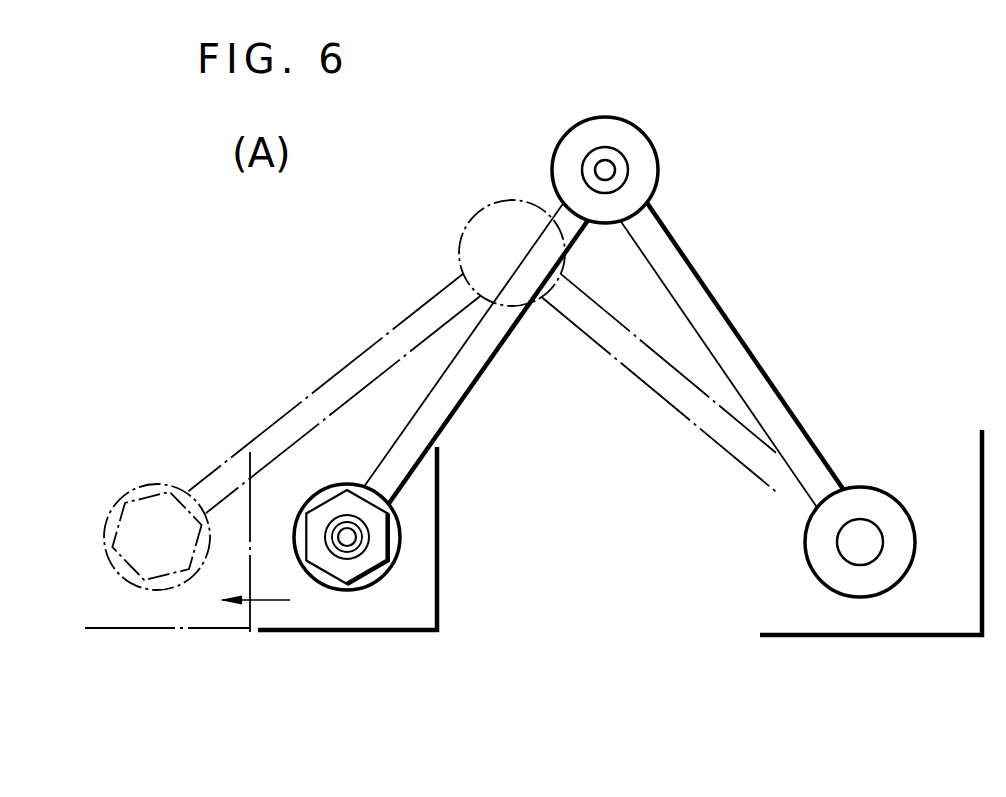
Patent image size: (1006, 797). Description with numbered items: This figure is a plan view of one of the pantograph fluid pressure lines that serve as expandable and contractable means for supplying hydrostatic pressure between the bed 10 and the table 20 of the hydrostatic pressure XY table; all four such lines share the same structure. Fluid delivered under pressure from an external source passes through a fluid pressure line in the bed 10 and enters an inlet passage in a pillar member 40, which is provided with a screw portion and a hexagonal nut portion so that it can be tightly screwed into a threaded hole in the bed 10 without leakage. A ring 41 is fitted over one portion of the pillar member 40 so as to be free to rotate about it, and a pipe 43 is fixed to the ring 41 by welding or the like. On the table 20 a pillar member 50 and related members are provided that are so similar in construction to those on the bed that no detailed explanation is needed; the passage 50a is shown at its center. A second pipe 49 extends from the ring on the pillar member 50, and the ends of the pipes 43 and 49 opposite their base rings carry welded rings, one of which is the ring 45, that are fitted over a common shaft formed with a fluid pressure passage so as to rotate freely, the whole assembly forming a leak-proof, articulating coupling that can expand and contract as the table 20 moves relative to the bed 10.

The bed 10 is at (920, 623).
The table 20 is at (397, 622).
The pillar member 40 is at (850, 550).
The ring 41 is at (893, 522).
The pipe 43 is at (760, 392).
The ring 45 is at (648, 178).
The pipe 49 is at (452, 397).
The pillar member 50 is at (333, 580).
The bolt center hole 50a is at (345, 535).